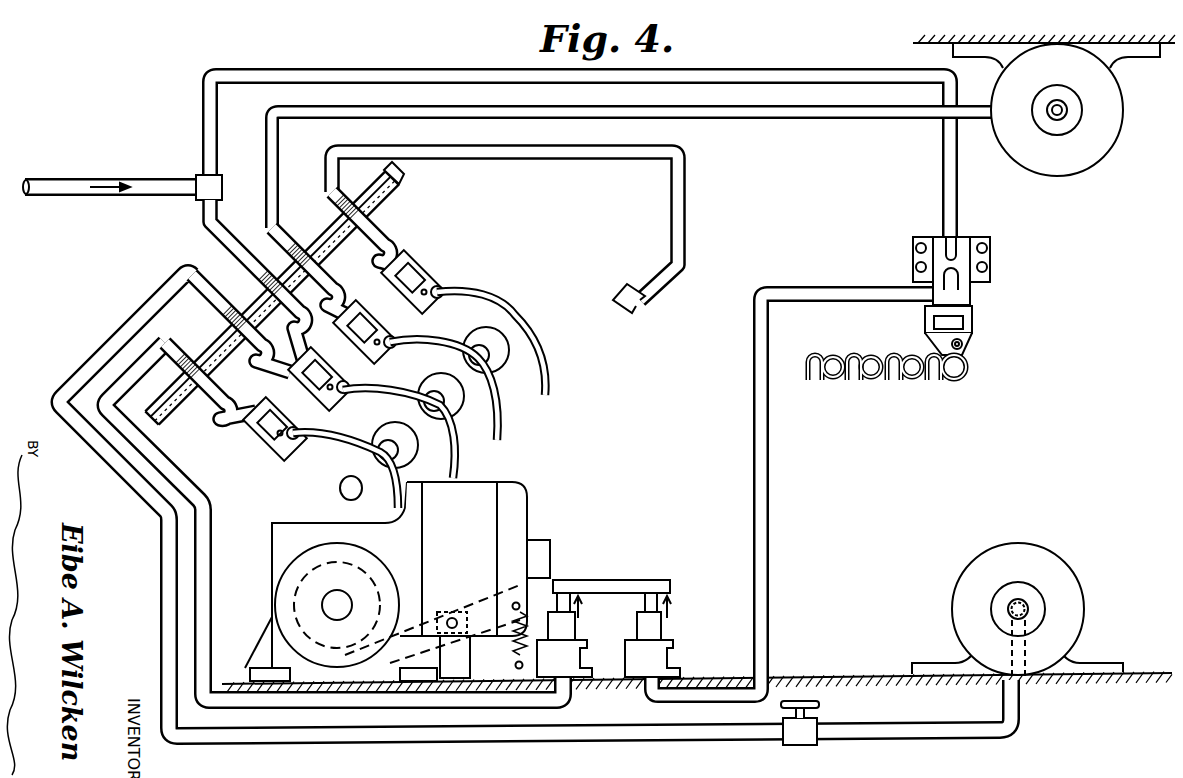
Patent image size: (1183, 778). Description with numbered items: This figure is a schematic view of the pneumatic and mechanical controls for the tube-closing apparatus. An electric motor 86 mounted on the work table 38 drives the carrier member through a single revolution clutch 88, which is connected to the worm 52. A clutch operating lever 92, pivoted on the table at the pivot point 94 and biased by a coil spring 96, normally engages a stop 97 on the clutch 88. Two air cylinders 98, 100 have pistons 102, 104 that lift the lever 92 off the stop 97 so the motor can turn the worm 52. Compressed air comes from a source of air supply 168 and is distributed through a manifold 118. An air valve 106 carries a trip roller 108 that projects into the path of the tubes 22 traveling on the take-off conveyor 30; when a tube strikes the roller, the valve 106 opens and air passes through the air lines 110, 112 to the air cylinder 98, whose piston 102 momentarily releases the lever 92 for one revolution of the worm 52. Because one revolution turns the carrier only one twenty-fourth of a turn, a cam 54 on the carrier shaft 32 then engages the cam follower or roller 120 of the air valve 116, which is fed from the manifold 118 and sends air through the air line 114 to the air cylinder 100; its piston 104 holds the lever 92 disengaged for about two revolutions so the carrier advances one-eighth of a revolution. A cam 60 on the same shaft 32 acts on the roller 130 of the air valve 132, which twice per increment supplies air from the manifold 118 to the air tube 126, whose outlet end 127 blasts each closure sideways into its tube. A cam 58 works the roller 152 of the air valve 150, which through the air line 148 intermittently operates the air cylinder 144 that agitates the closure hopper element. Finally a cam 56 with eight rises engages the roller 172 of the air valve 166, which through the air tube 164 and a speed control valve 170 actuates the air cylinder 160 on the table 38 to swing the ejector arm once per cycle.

The tubes 22 is at (835, 381).
The take-off conveyor 30 is at (902, 383).
The shaft 32 is at (370, 452).
The work table 38 is at (805, 670).
The worm 52 is at (337, 595).
The cam 54 is at (390, 486).
The cam 56 is at (469, 454).
The cam 58 is at (510, 406).
The cam 60 is at (545, 329).
The electric motor 86 is at (530, 504).
The single revolution clutch 88 is at (362, 575).
The clutch operating lever 92 is at (605, 580).
The pivot point 94 is at (415, 660).
The coil spring 96 is at (515, 645).
The stop 97 is at (345, 655).
The air cylinder 98 is at (665, 634).
The air cylinder 100 is at (576, 634).
The piston 102 is at (652, 593).
The piston 104 is at (565, 592).
The air valve 106 is at (975, 297).
The trip roller 108 is at (965, 349).
The air line 110 is at (740, 71).
The air line 112 is at (769, 480).
The air line 114 is at (210, 608).
The air valve 116 is at (240, 400).
The manifold 118 is at (330, 262).
The cam follower or roller 120 is at (285, 448).
The air tube 126 is at (688, 235).
The outlet end 127 is at (631, 320).
The cam follower or roller 130 is at (437, 275).
The air valve 132 is at (400, 243).
The air cylinder 144 is at (1105, 150).
The air line 148 is at (775, 107).
The air valve 150 is at (238, 300).
The cam follower or roller 152 is at (400, 334).
The air cylinder 160 is at (1065, 565).
The air tube 164 is at (645, 734).
The air valve 166 is at (212, 347).
The source of air supply 168 is at (141, 202).
The speed control valve 170 is at (820, 726).
The cam follower or roller 172 is at (346, 392).